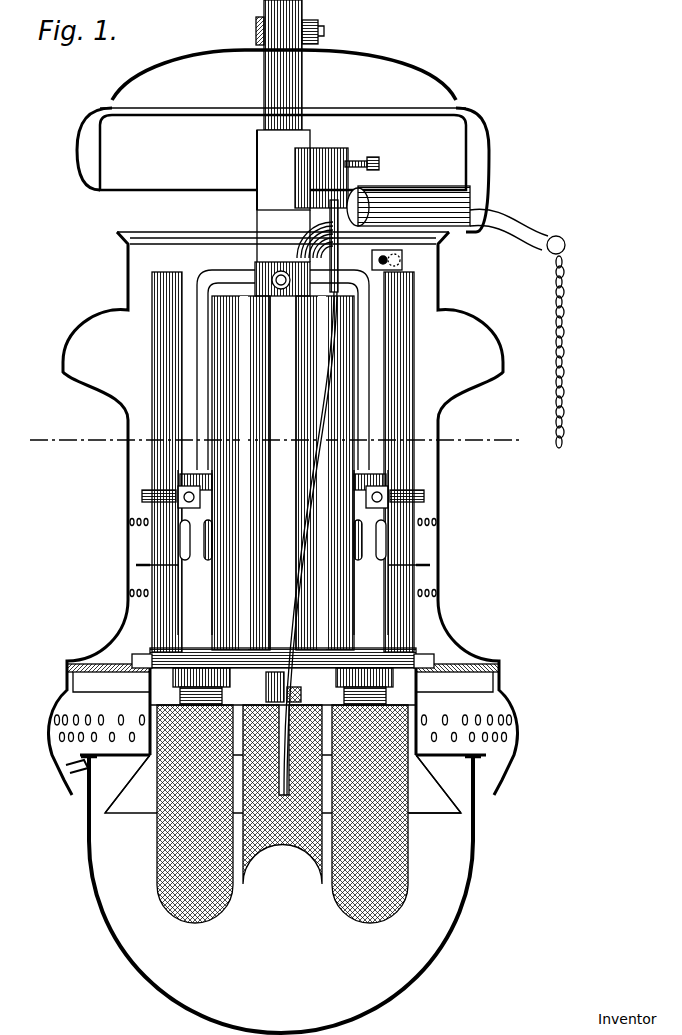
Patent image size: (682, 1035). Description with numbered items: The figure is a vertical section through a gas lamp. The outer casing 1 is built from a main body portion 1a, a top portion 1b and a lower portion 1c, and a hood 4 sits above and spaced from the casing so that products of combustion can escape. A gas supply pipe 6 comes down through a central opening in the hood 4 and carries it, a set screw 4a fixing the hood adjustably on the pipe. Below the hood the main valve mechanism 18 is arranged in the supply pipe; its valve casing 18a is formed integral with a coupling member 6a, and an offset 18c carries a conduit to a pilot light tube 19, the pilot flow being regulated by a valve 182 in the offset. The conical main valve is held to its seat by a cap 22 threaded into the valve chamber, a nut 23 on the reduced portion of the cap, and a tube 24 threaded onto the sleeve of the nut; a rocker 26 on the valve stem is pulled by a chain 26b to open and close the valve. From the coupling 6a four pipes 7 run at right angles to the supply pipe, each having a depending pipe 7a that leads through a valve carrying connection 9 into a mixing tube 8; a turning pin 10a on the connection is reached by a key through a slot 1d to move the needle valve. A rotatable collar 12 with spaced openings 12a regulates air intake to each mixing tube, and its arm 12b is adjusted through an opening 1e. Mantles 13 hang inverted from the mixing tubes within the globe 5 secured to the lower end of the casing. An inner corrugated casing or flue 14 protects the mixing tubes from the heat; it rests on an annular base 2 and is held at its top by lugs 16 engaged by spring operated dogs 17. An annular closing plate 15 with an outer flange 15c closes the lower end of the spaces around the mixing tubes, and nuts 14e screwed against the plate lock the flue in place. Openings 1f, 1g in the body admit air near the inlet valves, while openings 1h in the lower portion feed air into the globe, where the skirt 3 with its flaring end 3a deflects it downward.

The outer casing 1 is at (282, 522).
The main body portion 1a is at (127, 462).
The top portion 1b is at (127, 272).
The lower portion 1c is at (50, 732).
The opening or slot 1d is at (127, 516).
The openings 1e is at (130, 568).
The openings 1f is at (130, 527).
The openings 1g is at (128, 597).
The openings 1h is at (504, 720).
The annular base 2 is at (484, 648).
The skirt 3 is at (150, 707).
The outwardly flaring open end 3a is at (110, 816).
The hood 4 is at (77, 152).
The set screw 4a is at (320, 28).
The globe 5 is at (104, 928).
The gas supply pipe 6 is at (260, 10).
The coupling member 6a is at (258, 268).
The pipes 7 is at (218, 280).
The depending or connecting pipe 7a is at (182, 404).
The mixing tubes 8 is at (180, 620).
The valve carrying and supporting connection 9 is at (180, 482).
The turning pin 10a is at (142, 496).
The collar 12 is at (180, 540).
The spaced openings 12a is at (212, 540).
The arm or plate 12b is at (134, 566).
The mantles 13 is at (342, 910).
The inner casing or flue 14 is at (416, 364).
The nuts 14e is at (266, 688).
The annular closing plate 15 is at (281, 695).
The flange 15c is at (134, 664).
The apertured straps or lugs 16 is at (391, 255).
The spring operated dogs 17 is at (404, 262).
The main valve mechanism 18 is at (264, 196).
The valve casing 18a is at (262, 178).
The offset 18c is at (332, 160).
The valve 182 is at (378, 165).
The pilot light tube 19 is at (312, 562).
The cap or collar 22 is at (317, 246).
The nut 23 is at (368, 220).
The tube or sleeve 24 is at (412, 212).
The rocker 26 is at (505, 224).
The chain or cord 26b is at (558, 342).